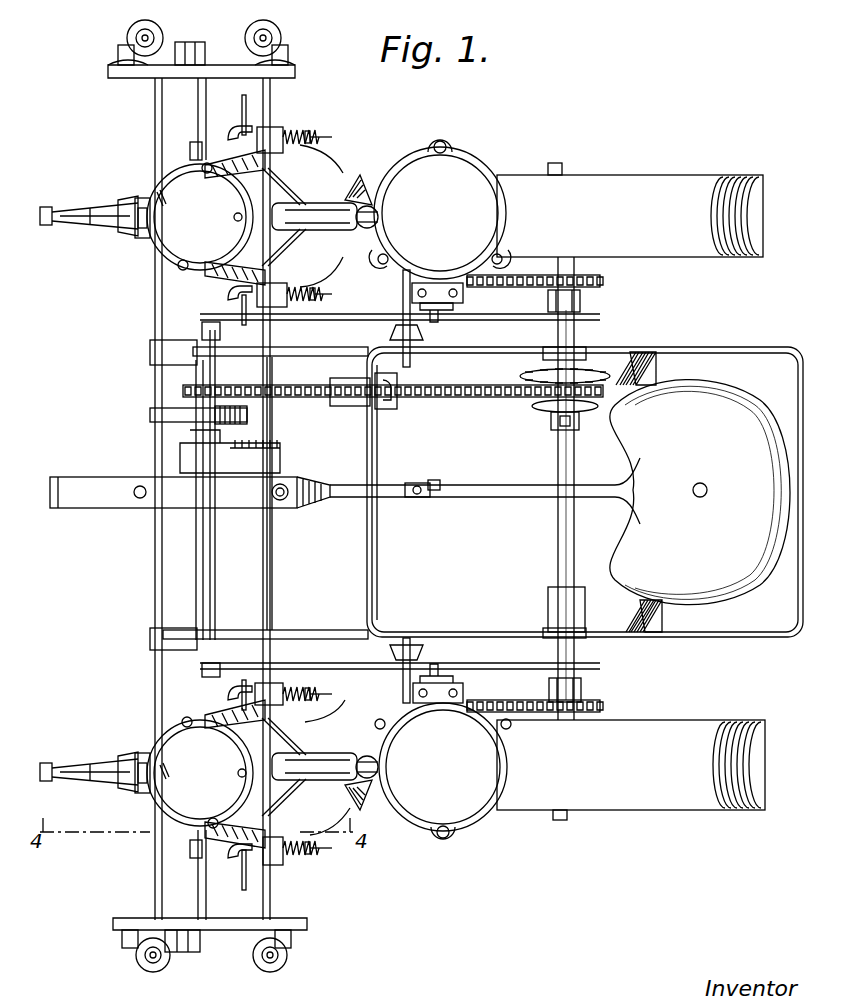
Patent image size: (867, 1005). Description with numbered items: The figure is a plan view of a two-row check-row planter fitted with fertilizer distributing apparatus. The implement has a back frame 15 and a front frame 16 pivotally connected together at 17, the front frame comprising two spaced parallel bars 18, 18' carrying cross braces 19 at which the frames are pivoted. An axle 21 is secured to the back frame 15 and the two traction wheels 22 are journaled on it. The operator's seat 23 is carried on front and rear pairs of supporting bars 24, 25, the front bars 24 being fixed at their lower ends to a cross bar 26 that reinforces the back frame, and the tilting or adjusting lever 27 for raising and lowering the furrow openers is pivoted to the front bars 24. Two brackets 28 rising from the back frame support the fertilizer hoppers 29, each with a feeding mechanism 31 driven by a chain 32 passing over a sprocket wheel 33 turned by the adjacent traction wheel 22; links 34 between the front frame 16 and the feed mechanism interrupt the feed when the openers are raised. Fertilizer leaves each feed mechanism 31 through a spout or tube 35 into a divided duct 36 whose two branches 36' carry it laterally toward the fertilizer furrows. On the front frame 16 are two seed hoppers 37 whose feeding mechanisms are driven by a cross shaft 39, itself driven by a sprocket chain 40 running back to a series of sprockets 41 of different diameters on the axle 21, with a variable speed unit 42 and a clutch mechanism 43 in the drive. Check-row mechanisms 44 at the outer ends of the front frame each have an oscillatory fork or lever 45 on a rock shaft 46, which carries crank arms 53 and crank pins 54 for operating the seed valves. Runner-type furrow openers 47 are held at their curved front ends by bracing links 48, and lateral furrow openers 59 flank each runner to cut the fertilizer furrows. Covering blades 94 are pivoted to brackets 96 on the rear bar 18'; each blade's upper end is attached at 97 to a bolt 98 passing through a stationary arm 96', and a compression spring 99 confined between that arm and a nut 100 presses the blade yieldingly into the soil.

The back frame 15 is at (740, 350).
The front frame 16 is at (155, 305).
The pivotal connection 17 is at (193, 352).
The parallel bar 18 is at (190, 522).
The parallel bar 18' is at (290, 493).
The cross braces 19 is at (150, 352).
The axle 21 is at (576, 438).
The traction wheels 22 is at (710, 257).
The operator's seat 23 is at (722, 420).
The front supporting bars 24 is at (535, 500).
The rear supporting bars 25 is at (656, 368).
The cross bar 26 is at (377, 583).
The tilting or adjusting lever 27 is at (425, 482).
The brackets 28 is at (403, 292).
The fertilizer hoppers 29 is at (486, 180).
The feeding mechanism 31 is at (463, 300).
The chain 32 is at (530, 287).
The sprocket wheel 33 is at (582, 300).
The links 34 is at (360, 320).
The spout or tube 35 is at (360, 206).
The divided duct or conduit 36 is at (336, 492).
The branches 36' is at (299, 486).
The seed hoppers 37 is at (170, 185).
The cross shaft 39 is at (196, 528).
The sprocket chain 40 is at (393, 400).
The sprockets 41 is at (525, 405).
The variable speed unit 42 is at (180, 458).
The clutch mechanism 43 is at (150, 414).
The check-row mechanisms 44 is at (207, 47).
The oscillatory fork or lever 45 is at (172, 50).
The rock shaft 46 is at (198, 95).
The furrow openers 47 is at (95, 210).
The bracing links 48 is at (100, 225).
The crank arms 53 is at (202, 330).
The crank pin 54 is at (205, 270).
The furrow openers 59 is at (222, 165).
The covering blades 94 is at (335, 482).
The bracket 96 is at (284, 505).
The stationary arm 96' is at (255, 487).
The pivotal attachment 97 is at (244, 120).
The bolt 98 is at (300, 135).
The compression spring 99 is at (307, 130).
The nut 100 is at (332, 136).